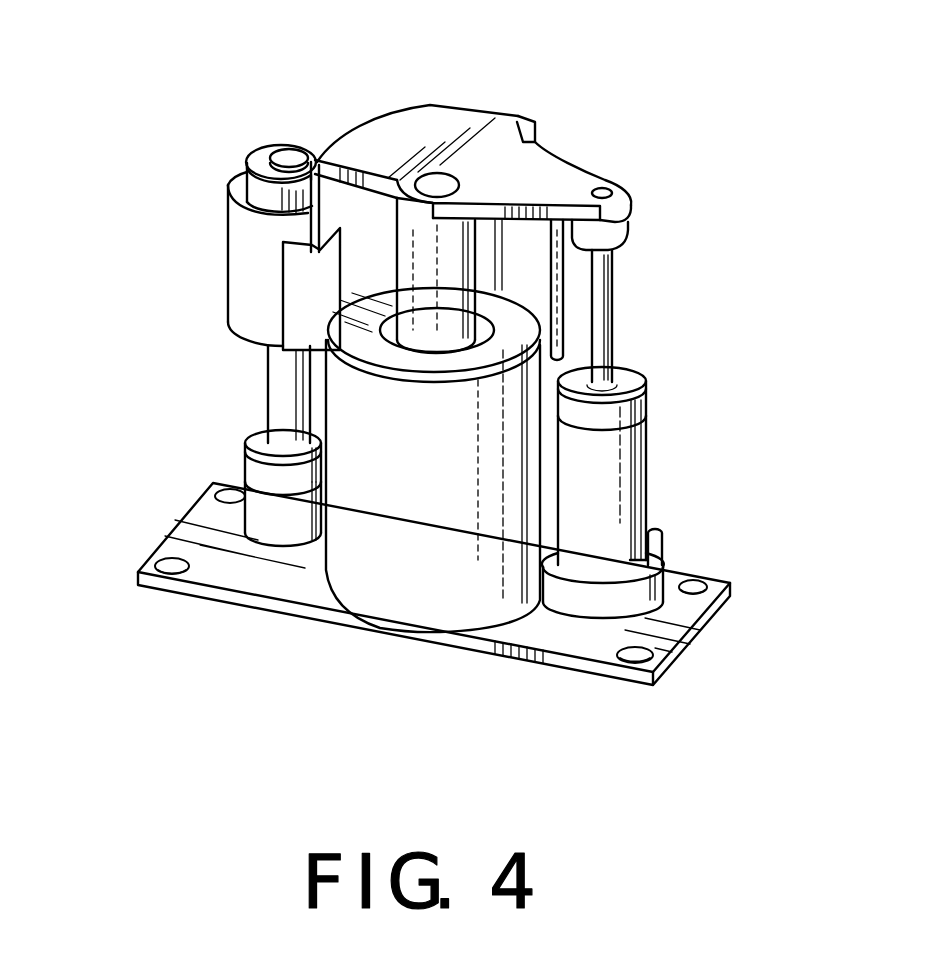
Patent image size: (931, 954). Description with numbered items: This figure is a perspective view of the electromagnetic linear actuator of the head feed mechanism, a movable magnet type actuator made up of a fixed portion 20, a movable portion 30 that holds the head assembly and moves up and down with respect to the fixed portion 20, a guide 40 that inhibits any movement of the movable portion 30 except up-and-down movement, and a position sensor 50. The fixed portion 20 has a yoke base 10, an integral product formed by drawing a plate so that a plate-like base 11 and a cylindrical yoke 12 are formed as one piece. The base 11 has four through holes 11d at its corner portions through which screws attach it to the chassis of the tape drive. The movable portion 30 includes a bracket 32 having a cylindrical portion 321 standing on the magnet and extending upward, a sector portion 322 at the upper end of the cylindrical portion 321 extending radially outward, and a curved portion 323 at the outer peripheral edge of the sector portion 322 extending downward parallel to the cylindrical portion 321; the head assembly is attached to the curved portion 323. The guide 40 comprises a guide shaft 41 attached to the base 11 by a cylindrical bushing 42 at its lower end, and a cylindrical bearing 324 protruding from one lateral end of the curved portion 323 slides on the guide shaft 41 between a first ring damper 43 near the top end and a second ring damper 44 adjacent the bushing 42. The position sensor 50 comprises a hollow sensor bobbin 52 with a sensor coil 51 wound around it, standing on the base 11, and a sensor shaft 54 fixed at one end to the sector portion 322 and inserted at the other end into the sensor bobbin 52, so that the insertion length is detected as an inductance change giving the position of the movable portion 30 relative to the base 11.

The yoke base 10 is at (513, 660).
The base 11 is at (567, 642).
The through holes 11d is at (216, 490).
The cylindrical yoke 12 is at (457, 603).
The fixed portion 20 is at (431, 527).
The movable portion 30 is at (534, 183).
The bracket 32 is at (390, 145).
The cylindrical portion 321 is at (453, 250).
The sector portion 322 is at (532, 167).
The curved portion 323 is at (546, 247).
The cylindrical bearing 324 is at (240, 265).
The guide 40 is at (202, 394).
The guide shaft 41 is at (266, 388).
The cylindrical bushing 42 is at (282, 532).
The first ring damper 43 is at (262, 163).
The second ring damper 44 is at (257, 470).
The position sensor 50 is at (680, 434).
The sensor coil 51 is at (641, 492).
The sensor bobbin 52 is at (642, 410).
The sensor shaft 54 is at (620, 352).